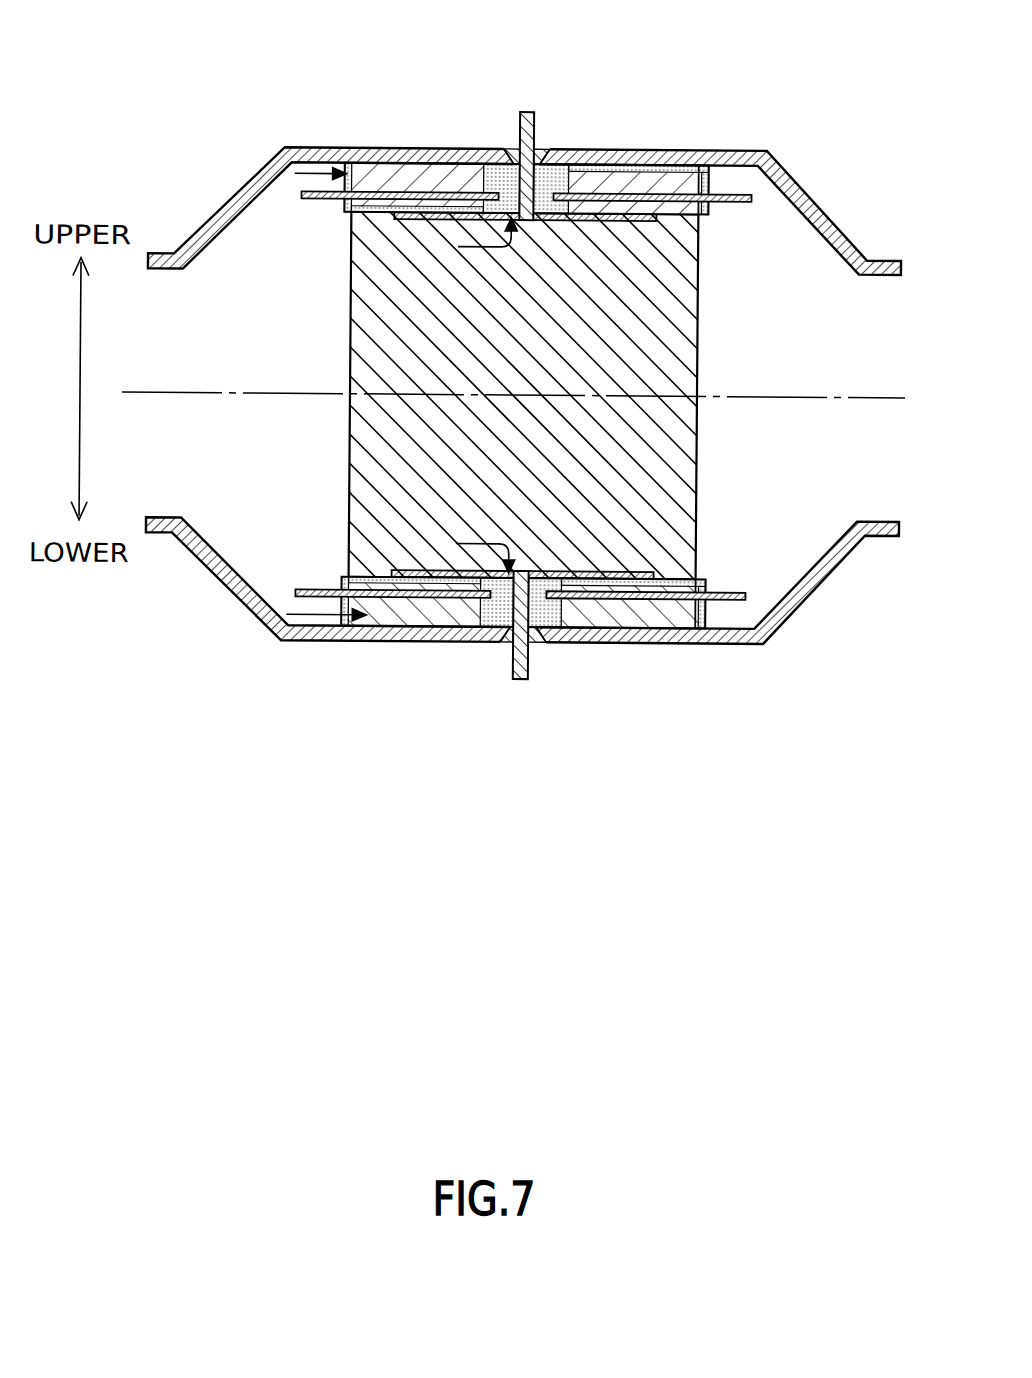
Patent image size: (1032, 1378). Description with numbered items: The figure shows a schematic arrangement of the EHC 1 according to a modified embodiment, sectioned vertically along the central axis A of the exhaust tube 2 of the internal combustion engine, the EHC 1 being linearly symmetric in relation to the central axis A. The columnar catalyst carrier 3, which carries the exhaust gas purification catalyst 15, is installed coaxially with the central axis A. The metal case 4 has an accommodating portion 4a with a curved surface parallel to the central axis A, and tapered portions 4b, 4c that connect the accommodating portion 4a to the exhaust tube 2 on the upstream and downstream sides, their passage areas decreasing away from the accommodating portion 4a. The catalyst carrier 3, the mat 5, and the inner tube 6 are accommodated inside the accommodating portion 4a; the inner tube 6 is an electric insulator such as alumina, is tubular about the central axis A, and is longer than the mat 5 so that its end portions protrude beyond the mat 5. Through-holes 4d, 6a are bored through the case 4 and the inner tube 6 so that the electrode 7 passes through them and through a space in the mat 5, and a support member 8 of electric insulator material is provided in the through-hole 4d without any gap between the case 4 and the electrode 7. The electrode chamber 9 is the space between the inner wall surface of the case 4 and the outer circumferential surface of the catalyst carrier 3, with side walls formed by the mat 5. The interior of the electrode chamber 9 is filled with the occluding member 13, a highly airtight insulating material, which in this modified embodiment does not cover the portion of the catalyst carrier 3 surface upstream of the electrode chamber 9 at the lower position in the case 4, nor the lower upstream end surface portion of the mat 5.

The EHC 1 is at (801, 45).
The exhaust tube 2 is at (153, 252).
The catalyst carrier 3 is at (348, 318).
The case 4 is at (523, 379).
The accommodating portion 4a is at (682, 146).
The tapered portion 4b is at (233, 192).
The tapered portion 4c is at (820, 197).
The through-hole 4d is at (513, 146).
The mat 5 is at (700, 180).
The inner tube 6 is at (481, 349).
The through-hole 6a is at (580, 165).
The electrode 7 is at (528, 108).
The support member 8 is at (540, 146).
The electrode chamber 9 is at (500, 185).
The occluding member 13 is at (465, 205).
The exhaust gas purification catalyst 15 is at (683, 325).
The central axis A is at (822, 392).